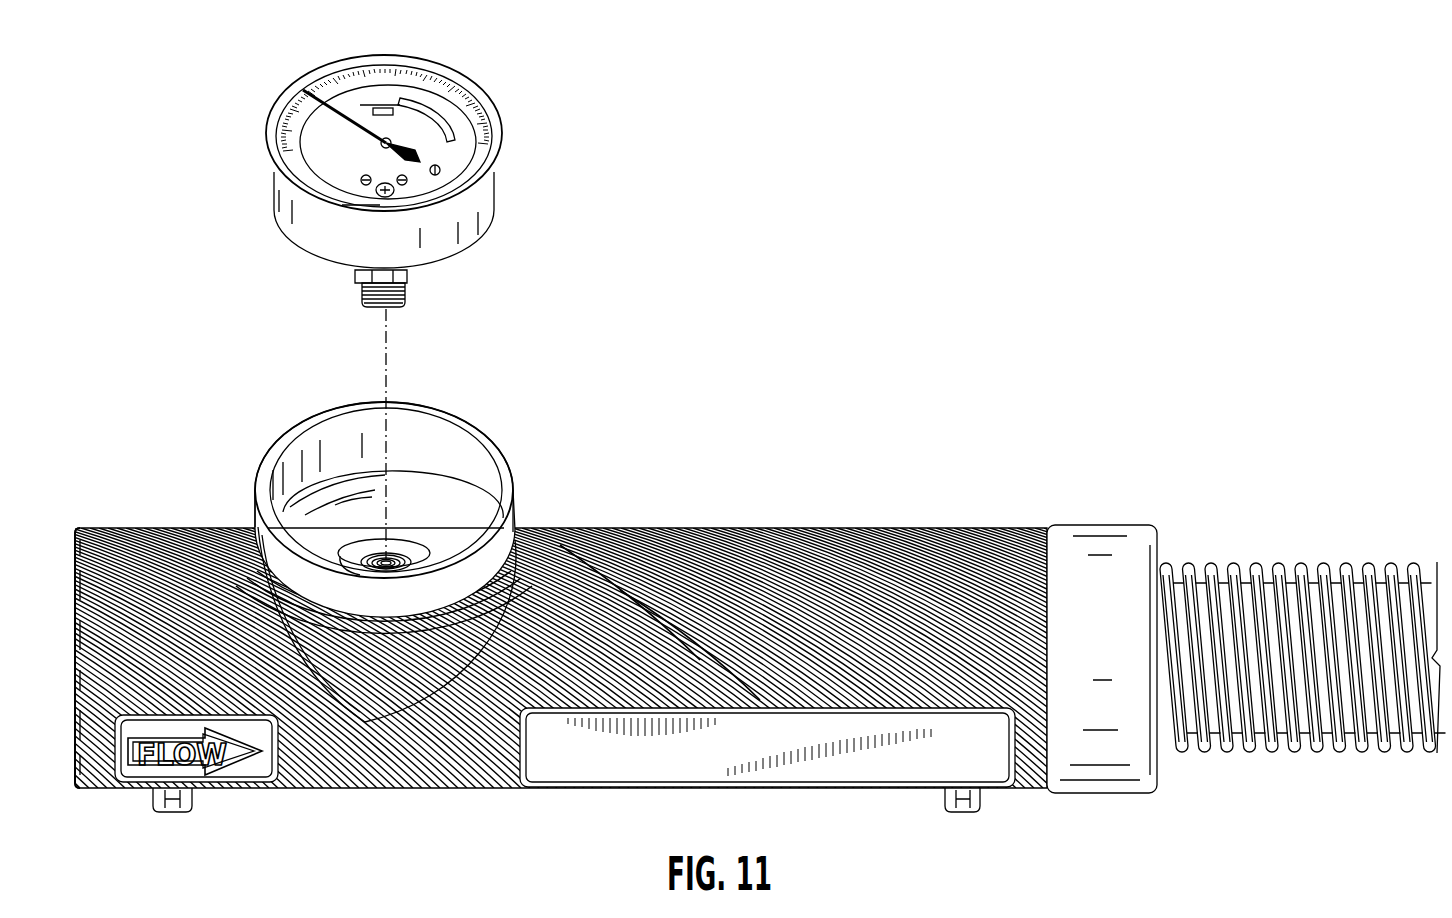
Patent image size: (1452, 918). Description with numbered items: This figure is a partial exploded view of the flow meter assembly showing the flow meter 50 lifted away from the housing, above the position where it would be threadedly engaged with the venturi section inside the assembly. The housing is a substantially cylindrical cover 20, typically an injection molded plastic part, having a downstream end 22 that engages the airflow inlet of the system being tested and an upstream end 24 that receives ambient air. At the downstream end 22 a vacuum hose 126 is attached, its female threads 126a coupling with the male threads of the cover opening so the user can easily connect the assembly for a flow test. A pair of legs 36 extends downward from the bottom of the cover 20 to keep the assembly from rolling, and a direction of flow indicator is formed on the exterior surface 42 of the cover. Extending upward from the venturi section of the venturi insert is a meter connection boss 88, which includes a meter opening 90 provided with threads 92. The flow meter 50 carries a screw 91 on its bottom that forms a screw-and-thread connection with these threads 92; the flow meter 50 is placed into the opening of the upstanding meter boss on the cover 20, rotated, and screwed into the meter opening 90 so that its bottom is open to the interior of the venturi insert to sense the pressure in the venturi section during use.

The cover 20 is at (788, 527).
The downstream end 22 is at (1098, 540).
The upstream end 24 is at (112, 546).
The legs 36 is at (175, 812).
The exterior surface 42 is at (660, 600).
The flow meter 50 is at (463, 90).
The meter connection boss 88 is at (496, 525).
The meter opening 90 is at (420, 555).
The screw 91 is at (410, 288).
The threads 92 is at (392, 558).
The vacuum hose 126 is at (1434, 600).
The female threads 126a is at (1418, 565).